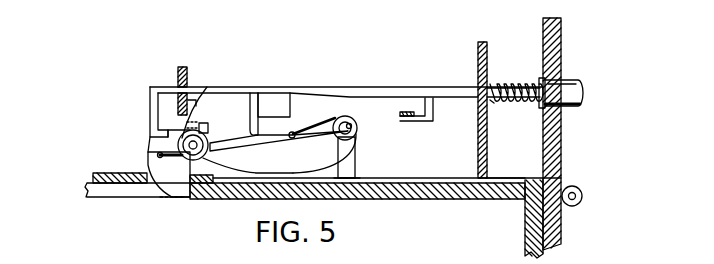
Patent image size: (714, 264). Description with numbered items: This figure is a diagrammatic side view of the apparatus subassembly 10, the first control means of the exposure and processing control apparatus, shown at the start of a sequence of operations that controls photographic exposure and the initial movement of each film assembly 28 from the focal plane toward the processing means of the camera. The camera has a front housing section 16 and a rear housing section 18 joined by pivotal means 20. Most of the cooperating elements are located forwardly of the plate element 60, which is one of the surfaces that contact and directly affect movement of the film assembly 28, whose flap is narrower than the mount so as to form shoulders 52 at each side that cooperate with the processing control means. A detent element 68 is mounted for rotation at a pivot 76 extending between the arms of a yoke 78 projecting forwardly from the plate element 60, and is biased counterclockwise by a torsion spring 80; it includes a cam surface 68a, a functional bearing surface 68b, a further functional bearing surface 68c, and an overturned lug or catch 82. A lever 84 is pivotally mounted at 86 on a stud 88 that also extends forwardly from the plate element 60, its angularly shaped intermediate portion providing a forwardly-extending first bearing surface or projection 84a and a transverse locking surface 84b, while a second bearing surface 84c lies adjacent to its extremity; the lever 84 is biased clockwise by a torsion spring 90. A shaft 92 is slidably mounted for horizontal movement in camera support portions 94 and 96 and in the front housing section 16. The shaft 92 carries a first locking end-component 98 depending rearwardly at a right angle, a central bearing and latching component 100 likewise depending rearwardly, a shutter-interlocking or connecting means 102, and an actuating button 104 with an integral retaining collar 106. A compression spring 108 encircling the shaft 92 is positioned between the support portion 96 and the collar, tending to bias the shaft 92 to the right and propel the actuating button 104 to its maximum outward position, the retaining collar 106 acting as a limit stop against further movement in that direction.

The apparatus subassembly 10 is at (357, 54).
The front housing section 16 is at (562, 48).
The rear housing section 18 is at (562, 236).
The pivotal means 20 is at (583, 190).
The film assembly 28 is at (388, 199).
The shoulders 52 is at (172, 196).
The plate element 60 is at (482, 185).
The detent element 68 is at (180, 199).
The cam surface 68a is at (157, 197).
The functional bearing surface 68b is at (160, 137).
The functional bearing surface 68c is at (210, 190).
The pivot 76 is at (205, 90).
The yoke 78 is at (158, 157).
The torsion spring 80 is at (228, 166).
The overturned lug or catch 82 is at (210, 127).
The lever 84 is at (279, 146).
The first bearing surface or projection 84a is at (284, 128).
The transverse locking surface 84b is at (253, 93).
The second bearing surface 84c is at (192, 104).
The pivot of lever 86 is at (357, 132).
The stud 88 is at (356, 152).
The torsion spring 90 is at (367, 172).
The shaft 92 is at (368, 87).
The camera support portion 94 is at (177, 76).
The camera support portion 96 is at (478, 68).
The first locking end-component 98 is at (148, 140).
The central bearing and latching component 100 is at (286, 95).
The shutter-interlocking or connecting means 102 is at (406, 121).
The actuating button 104 is at (584, 82).
The retaining collar 106 is at (539, 82).
The compression spring 108 is at (512, 104).